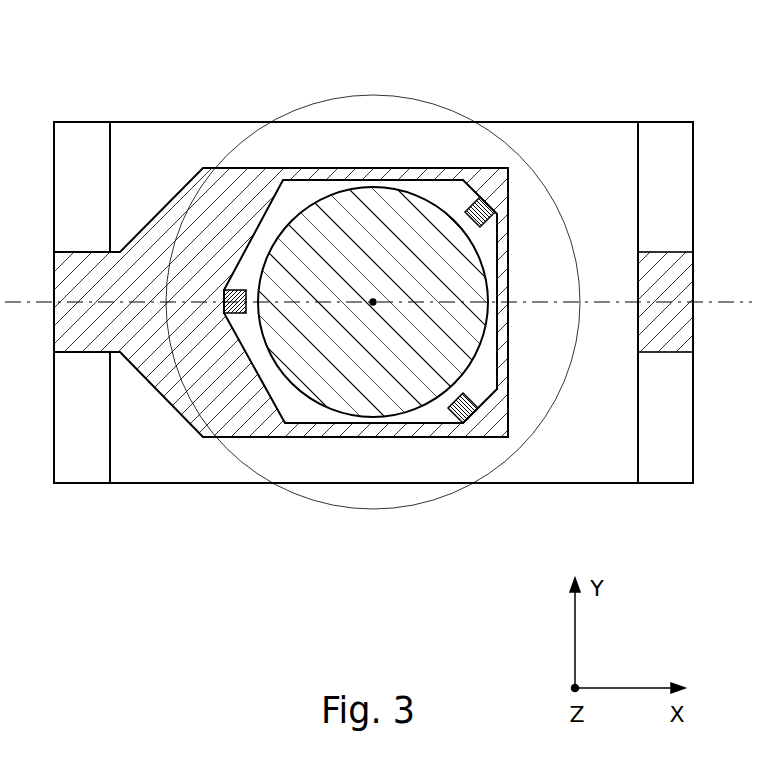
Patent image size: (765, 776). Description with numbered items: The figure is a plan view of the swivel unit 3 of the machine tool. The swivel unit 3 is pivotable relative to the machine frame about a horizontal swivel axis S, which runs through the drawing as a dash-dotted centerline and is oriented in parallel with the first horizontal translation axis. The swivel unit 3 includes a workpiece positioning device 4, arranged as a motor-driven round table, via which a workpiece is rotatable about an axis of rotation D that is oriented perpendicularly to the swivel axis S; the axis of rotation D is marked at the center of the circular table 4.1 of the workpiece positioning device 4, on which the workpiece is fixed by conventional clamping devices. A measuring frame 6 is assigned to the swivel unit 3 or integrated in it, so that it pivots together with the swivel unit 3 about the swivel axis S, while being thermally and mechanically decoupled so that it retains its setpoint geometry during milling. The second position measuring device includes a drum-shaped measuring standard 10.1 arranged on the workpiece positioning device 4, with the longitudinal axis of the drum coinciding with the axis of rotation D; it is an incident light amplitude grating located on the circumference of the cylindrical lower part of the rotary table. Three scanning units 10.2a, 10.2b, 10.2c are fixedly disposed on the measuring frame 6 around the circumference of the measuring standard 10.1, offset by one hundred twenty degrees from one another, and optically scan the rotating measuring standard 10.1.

The swivel unit 3 is at (667, 130).
The workpiece positioning device 4 is at (337, 213).
The table 4.1 is at (378, 105).
The measuring frame 6 is at (155, 383).
The measuring standard 10.1 is at (348, 412).
The scanning unit 10.2a is at (225, 290).
The scanning unit 10.2b is at (466, 423).
The scanning unit 10.2c is at (480, 197).
The axis of rotation D is at (376, 302).
The swivel axis S is at (733, 300).